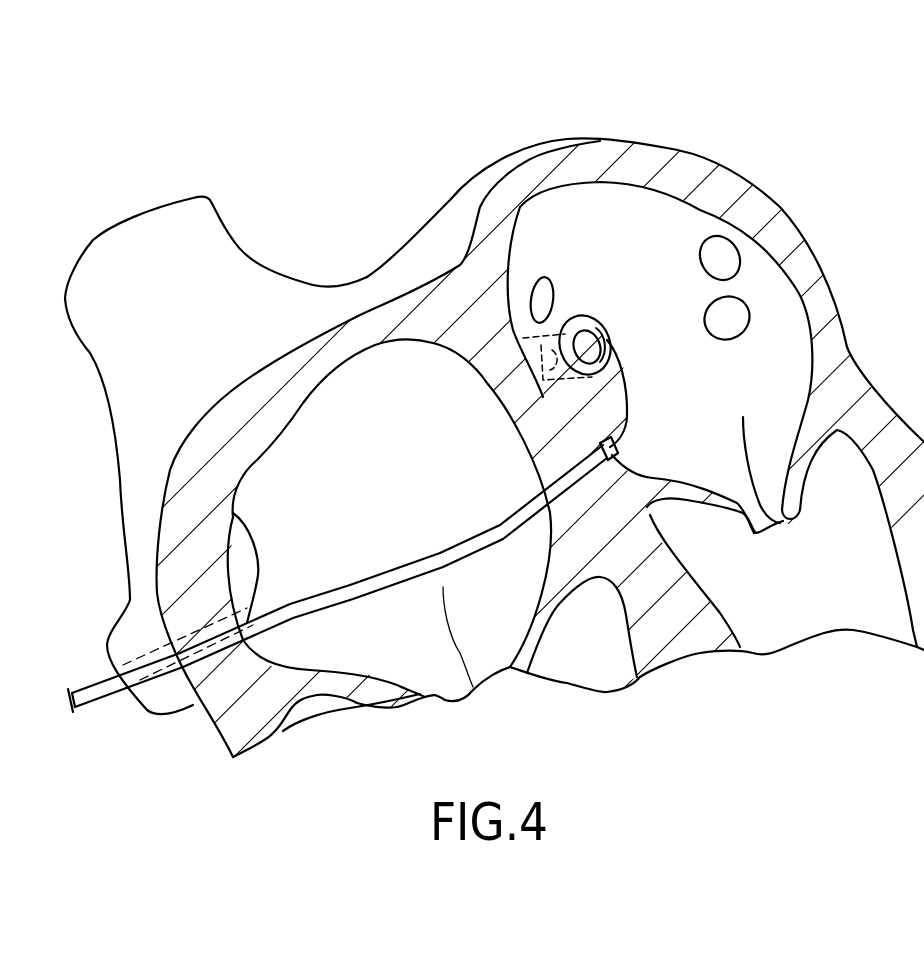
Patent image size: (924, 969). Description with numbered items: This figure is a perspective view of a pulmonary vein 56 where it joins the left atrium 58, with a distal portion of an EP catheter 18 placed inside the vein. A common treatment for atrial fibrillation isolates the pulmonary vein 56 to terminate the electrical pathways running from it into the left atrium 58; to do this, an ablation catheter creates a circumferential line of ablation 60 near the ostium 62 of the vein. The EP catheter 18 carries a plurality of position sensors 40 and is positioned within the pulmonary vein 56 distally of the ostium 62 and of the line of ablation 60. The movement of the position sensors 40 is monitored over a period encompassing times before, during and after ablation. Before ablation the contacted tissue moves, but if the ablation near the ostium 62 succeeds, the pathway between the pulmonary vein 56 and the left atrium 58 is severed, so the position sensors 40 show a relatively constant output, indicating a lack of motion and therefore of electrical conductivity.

The EP catheter 18 is at (440, 555).
The position sensors 40 is at (553, 337).
The pulmonary vein 56 is at (586, 318).
The left atrium 58 is at (790, 300).
The circumferential line of ablation 60 is at (571, 322).
The ostium 62 is at (593, 350).